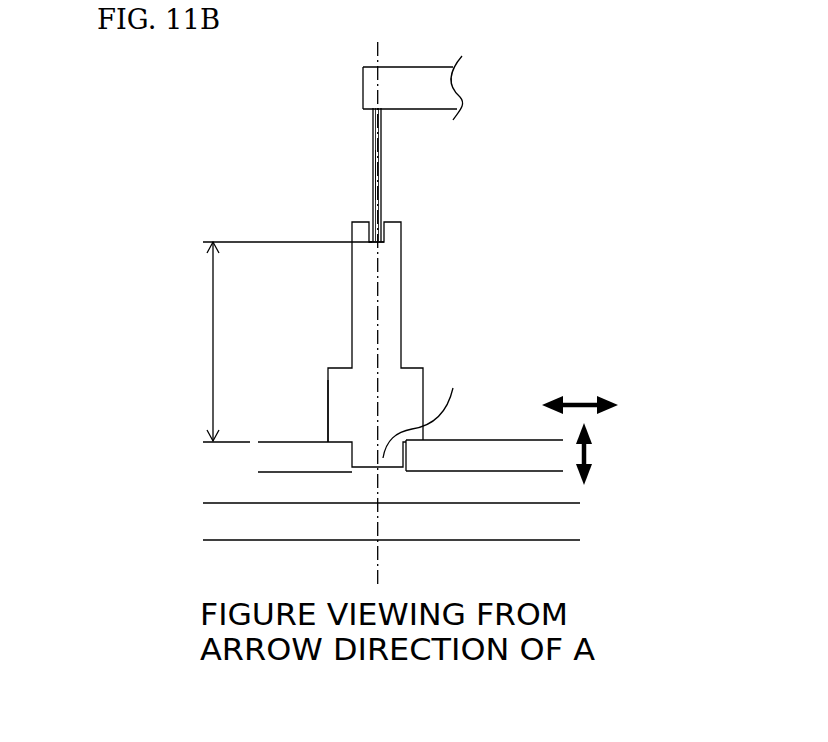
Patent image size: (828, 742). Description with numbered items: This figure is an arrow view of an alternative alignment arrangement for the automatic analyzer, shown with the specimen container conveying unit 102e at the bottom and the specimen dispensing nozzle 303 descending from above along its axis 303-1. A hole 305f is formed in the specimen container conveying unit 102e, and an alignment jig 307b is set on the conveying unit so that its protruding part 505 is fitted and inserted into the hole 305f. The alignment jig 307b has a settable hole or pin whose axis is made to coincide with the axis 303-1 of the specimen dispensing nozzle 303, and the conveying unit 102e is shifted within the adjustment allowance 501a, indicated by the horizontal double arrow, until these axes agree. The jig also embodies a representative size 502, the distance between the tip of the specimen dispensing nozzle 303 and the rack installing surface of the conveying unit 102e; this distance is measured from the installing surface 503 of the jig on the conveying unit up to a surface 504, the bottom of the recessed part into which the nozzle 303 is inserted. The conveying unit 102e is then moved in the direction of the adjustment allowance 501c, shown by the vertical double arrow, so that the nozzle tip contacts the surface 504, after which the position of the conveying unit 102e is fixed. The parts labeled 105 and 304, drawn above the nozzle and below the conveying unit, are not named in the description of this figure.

The arm 105 is at (437, 93).
The specimen dispensing nozzle 303 is at (373, 203).
The axis of the specimen dispensing nozzle 303-1 is at (380, 182).
The surface of a recessed part 504 is at (378, 241).
The alignment jig 307b is at (406, 332).
The representative size 502 is at (213, 366).
The installing surface of the alignment jig 503 is at (328, 420).
The protruding part of the alignment jig 505 is at (438, 406).
The hole 305f is at (347, 462).
The specimen container conveying unit 102e is at (465, 458).
The adjustment allowance 501a is at (577, 403).
The adjustment allowance 501c is at (587, 455).
The stage 304 is at (262, 523).